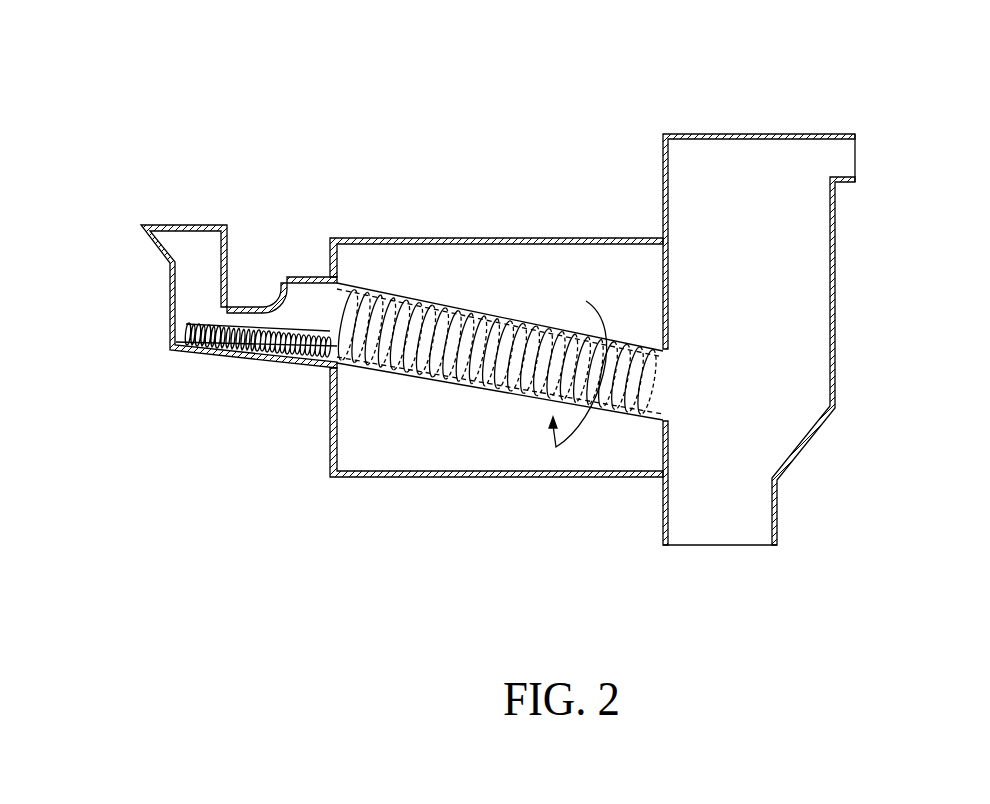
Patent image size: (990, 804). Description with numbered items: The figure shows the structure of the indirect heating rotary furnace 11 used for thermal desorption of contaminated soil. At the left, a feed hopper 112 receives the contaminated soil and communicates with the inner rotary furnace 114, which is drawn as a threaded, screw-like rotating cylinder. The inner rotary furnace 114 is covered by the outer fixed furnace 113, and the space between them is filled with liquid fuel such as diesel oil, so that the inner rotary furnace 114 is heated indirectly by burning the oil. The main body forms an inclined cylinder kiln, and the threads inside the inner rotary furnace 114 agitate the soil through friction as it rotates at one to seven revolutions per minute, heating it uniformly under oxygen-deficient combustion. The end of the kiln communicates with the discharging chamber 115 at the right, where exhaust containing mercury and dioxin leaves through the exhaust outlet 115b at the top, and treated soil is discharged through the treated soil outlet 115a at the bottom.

The indirect heating rotary furnace 11 is at (68, 106).
The feed hopper 112 is at (181, 224).
The outer fixed furnace 113 is at (482, 255).
The inner rotary furnace 114 is at (468, 387).
The discharging chamber 115 is at (810, 365).
The treated soil outlet 115a is at (733, 535).
The exhaust outlet 115b is at (850, 162).